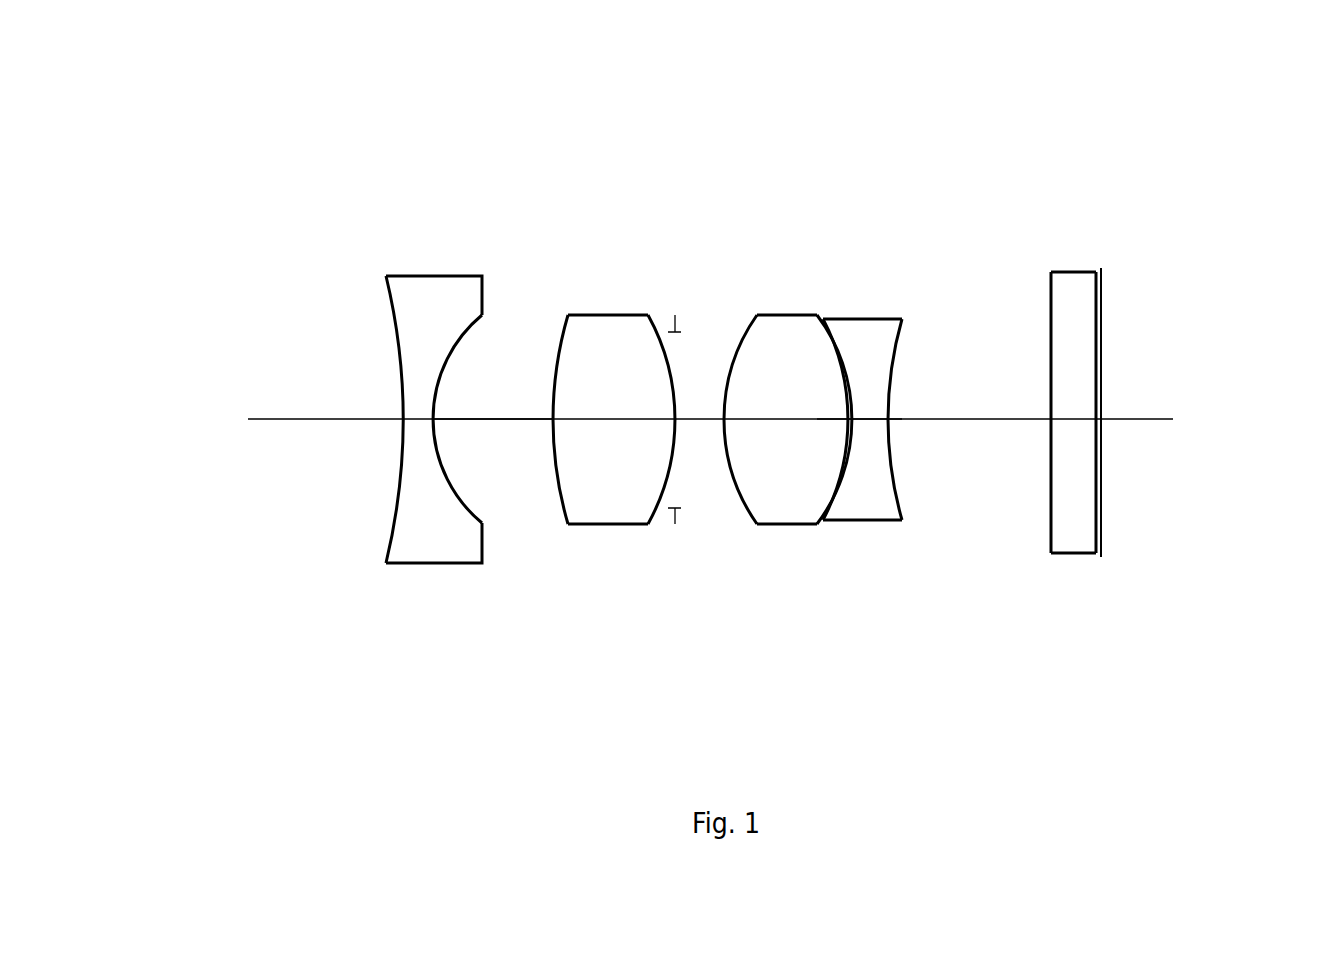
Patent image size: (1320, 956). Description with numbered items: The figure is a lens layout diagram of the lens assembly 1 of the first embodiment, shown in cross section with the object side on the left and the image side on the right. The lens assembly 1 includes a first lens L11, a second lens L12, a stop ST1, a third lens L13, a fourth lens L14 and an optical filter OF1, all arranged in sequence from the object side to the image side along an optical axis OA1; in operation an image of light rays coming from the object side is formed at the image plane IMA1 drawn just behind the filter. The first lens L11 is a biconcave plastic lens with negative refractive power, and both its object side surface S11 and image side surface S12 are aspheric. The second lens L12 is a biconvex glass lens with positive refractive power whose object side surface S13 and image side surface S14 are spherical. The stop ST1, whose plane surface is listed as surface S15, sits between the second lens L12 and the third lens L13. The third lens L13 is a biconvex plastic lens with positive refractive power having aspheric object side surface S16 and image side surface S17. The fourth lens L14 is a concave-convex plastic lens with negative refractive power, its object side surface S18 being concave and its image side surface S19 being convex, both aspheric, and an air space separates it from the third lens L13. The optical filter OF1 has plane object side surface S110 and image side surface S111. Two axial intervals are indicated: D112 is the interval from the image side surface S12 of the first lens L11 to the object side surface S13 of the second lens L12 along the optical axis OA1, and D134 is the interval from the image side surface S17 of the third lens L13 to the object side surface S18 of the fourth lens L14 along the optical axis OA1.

The lens assembly 1 is at (200, 98).
The first lens L11 is at (377, 422).
The second lens L12 is at (611, 443).
The third lens L13 is at (798, 448).
The fourth lens L14 is at (912, 451).
The stop ST1 is at (695, 420).
The optical filter OF1 is at (1059, 426).
The image plane IMA1 is at (1102, 268).
The optical axis OA1 is at (325, 420).
The object side surface of the first lens S11 is at (397, 512).
The image side surface of the first lens S12 is at (465, 510).
The object side surface of the second lens S13 is at (562, 487).
The image side surface of the second lens S14 is at (662, 490).
The stop surface S15 is at (675, 510).
The object side surface of the third lens S16 is at (727, 480).
The image side surface of the third lens S17 is at (837, 488).
The object side surface of the fourth lens S18 is at (850, 478).
The image side surface of the fourth lens S19 is at (893, 487).
The object side surface of the optical filter S110 is at (1050, 537).
The image side surface of the optical filter S111 is at (1093, 540).
The interval from the image side surface of the first lens to the object side surfac D112 is at (513, 420).
The interval from the image side surface of the third lens to the object side surfac D134 is at (845, 480).